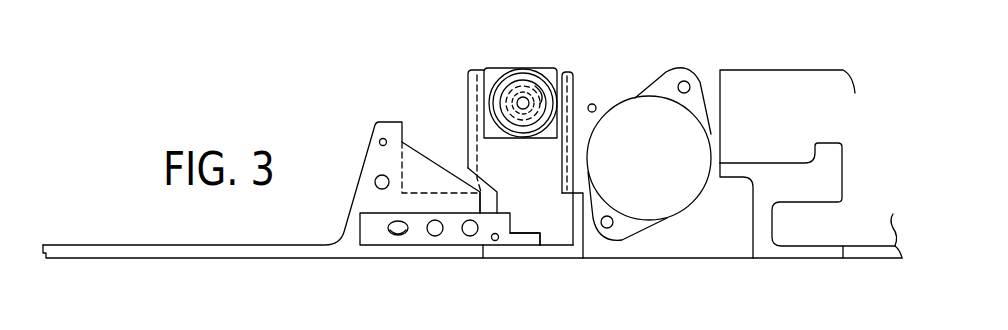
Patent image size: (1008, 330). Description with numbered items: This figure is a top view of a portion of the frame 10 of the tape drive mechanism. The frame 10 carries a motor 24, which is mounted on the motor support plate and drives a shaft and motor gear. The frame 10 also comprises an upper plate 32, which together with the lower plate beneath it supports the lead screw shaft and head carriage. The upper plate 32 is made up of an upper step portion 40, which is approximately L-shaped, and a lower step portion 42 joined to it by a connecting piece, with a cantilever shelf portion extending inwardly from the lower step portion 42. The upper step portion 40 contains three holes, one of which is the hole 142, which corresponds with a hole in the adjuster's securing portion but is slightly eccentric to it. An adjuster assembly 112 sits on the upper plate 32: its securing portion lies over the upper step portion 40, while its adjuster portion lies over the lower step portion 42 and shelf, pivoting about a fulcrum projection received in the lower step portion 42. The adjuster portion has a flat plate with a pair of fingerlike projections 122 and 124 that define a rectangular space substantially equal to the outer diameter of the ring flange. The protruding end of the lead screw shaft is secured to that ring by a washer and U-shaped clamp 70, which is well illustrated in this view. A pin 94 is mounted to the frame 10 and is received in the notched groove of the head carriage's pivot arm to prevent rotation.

The frame 10 is at (85, 259).
The upper plate 32 is at (422, 252).
The hole 142 is at (398, 236).
The upper step portion 40 is at (458, 247).
The lower step portion 42 is at (525, 247).
The adjuster assembly 112 is at (564, 236).
The fingerlike projection 124 is at (468, 80).
The fingerlike projection 122 is at (573, 74).
The washer and U-shaped clamp 70 is at (515, 83).
The pin 94 is at (596, 105).
The motor 24 is at (657, 203).